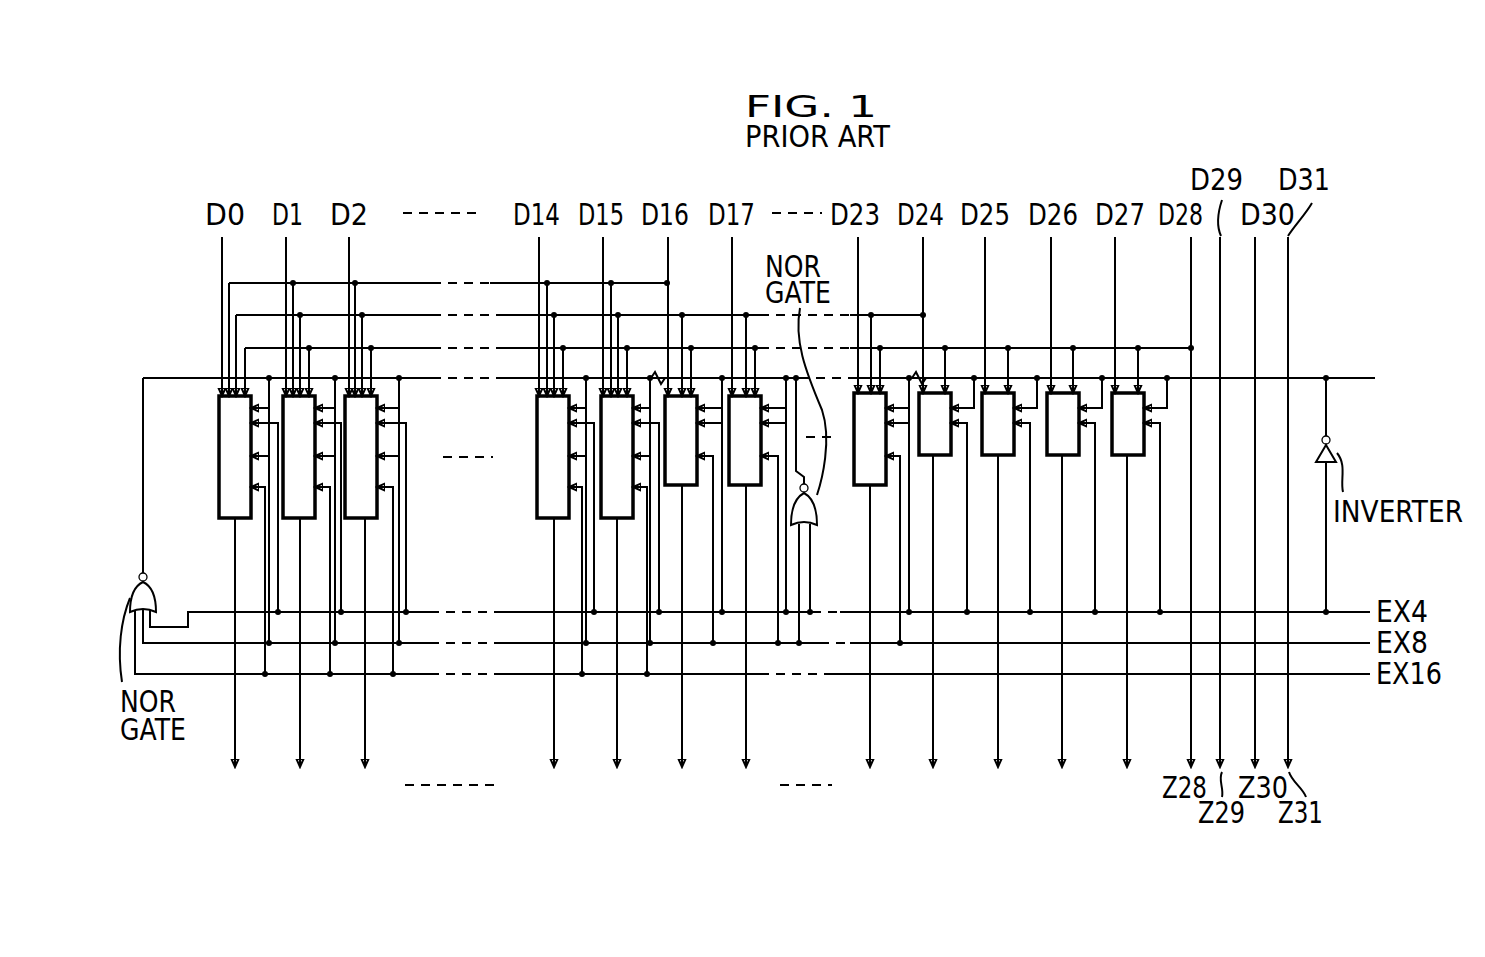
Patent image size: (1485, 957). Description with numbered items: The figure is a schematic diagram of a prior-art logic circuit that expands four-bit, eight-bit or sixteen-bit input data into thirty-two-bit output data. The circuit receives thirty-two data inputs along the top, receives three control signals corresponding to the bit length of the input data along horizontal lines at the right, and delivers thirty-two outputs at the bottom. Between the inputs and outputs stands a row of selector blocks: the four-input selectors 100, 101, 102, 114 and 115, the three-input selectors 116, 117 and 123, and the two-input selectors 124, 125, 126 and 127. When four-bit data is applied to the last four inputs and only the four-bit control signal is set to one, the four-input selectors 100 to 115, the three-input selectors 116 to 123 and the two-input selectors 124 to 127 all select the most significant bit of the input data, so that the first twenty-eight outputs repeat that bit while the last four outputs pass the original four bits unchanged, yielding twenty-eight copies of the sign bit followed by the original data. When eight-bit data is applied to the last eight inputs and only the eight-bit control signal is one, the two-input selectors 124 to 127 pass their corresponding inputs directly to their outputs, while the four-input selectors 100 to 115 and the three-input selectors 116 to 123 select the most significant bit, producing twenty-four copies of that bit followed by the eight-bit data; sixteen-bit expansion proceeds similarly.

The 4-input selector 100 is at (227, 518).
The 4-input selector 101 is at (293, 518).
The 4-input selector 102 is at (367, 518).
The 4-input selector 114 is at (548, 514).
The 4-input selector 115 is at (615, 514).
The 3-input selector 116 is at (675, 485).
The 3-input selector 117 is at (750, 486).
The 3-input selector 123 is at (866, 483).
The 2-input selector 124 is at (947, 393).
The 2-input selector 125 is at (1015, 393).
The 2-input selector 126 is at (1080, 393).
The 2-input selector 127 is at (1145, 393).